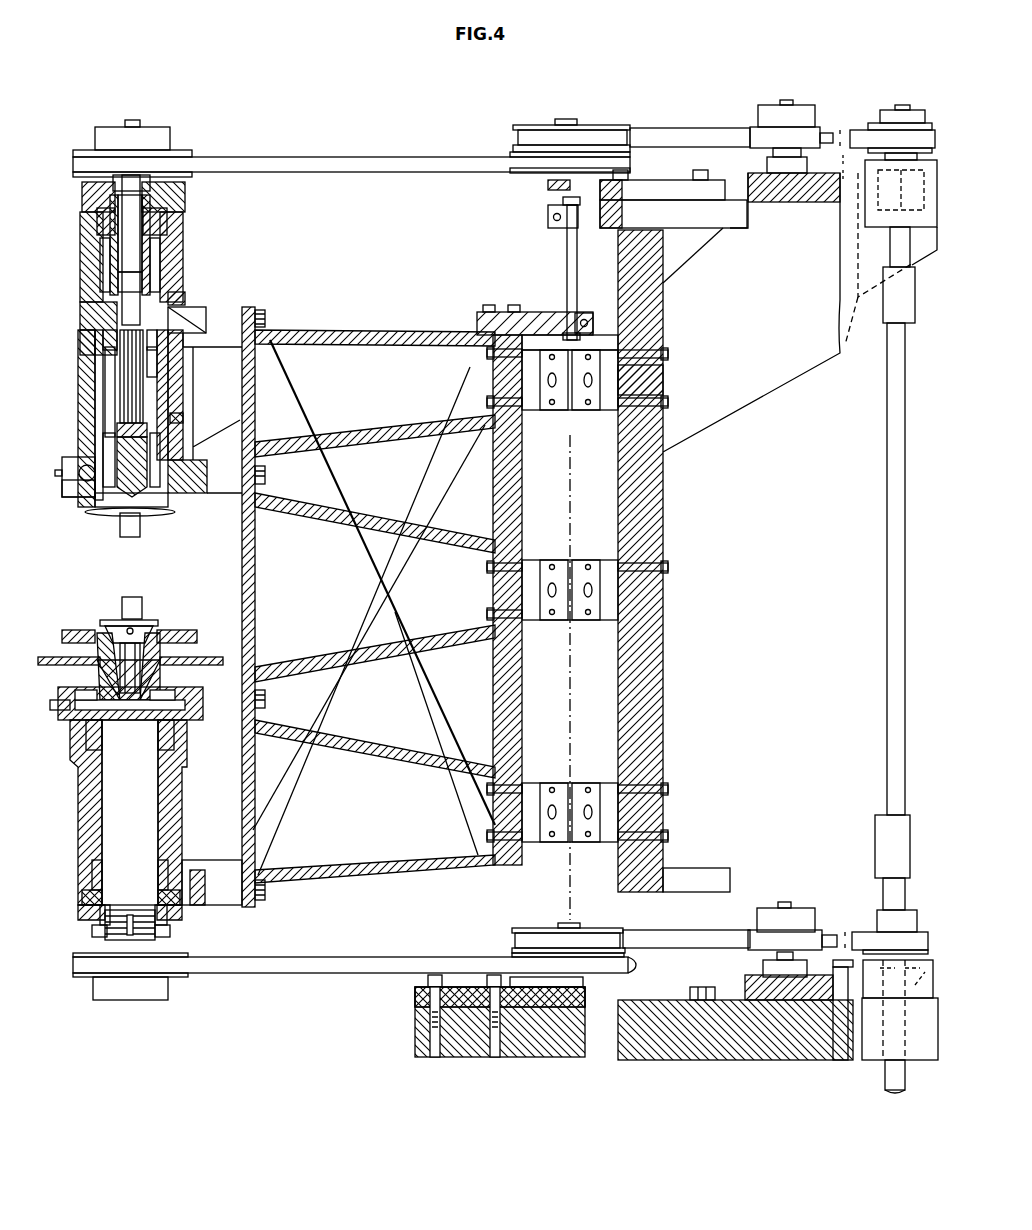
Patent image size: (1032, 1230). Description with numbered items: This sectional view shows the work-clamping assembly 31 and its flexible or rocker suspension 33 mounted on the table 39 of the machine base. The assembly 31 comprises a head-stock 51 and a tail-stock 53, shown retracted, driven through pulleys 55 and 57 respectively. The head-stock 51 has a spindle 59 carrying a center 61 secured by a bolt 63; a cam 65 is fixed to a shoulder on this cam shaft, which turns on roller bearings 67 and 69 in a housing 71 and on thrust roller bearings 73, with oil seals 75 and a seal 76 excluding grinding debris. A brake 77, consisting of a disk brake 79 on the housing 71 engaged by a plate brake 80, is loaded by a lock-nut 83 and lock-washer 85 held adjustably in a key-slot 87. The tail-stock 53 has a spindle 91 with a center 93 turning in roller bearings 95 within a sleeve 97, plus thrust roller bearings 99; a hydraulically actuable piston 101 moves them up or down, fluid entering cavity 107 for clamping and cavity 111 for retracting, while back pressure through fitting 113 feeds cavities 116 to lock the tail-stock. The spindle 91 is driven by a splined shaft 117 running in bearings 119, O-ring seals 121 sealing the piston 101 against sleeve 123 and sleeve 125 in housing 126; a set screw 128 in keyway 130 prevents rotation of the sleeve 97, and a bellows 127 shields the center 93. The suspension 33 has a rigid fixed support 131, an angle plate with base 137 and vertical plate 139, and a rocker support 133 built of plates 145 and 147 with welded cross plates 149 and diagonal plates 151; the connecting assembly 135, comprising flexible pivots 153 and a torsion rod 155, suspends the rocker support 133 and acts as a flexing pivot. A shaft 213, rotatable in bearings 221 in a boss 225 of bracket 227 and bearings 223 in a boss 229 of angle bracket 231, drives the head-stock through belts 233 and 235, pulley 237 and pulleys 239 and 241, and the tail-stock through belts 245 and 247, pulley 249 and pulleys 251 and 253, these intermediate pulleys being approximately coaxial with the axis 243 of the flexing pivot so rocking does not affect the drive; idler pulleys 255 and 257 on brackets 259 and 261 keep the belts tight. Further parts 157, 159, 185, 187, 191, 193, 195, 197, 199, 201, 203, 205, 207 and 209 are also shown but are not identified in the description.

The work-clamping assembly 31 is at (136, 576).
The flexible suspension 33 is at (379, 254).
The table 39 is at (663, 1091).
The head-stock 51 is at (140, 804).
The tail-stock 53 is at (135, 362).
The pulley 55 is at (170, 980).
The pulley 57 is at (182, 152).
The spindle 59 is at (158, 640).
The center 61 is at (142, 622).
The bolt 63 is at (170, 680).
The cam 65 is at (210, 665).
The roller bearing 67 is at (203, 716).
The roller bearing 69 is at (92, 872).
The housing 71 is at (140, 772).
The thrust roller bearings 73 is at (72, 762).
The oil seals 75 is at (82, 898).
The seal 76 is at (197, 636).
The brake 77 is at (62, 926).
The disk brake 79 is at (108, 910).
The plate brake 80 is at (150, 912).
The lock-nut 83 is at (162, 938).
The lock-washer 85 is at (167, 922).
The key-slot 87 is at (100, 936).
The spindle 91 is at (92, 513).
The center 93 is at (118, 530).
The roller bearings 95 is at (150, 372).
The sleeve 97 is at (185, 372).
The thrust roller bearings 99 is at (103, 340).
The hydraulically actuable piston 101 is at (160, 262).
The cavity 107 is at (178, 205).
The cavity 111 is at (98, 258).
The fitting 113 is at (62, 476).
The cavities 116 is at (68, 490).
The splined shaft 117 is at (95, 328).
The bearings 119 is at (150, 183).
The O-ring seals 121 is at (97, 230).
The sleeve 123 is at (150, 237).
The sleeve 125 is at (193, 292).
The housing 126 is at (183, 400).
The bellows 127 is at (172, 515).
The set screw 128 is at (183, 420).
The keyway 130 is at (170, 393).
The fixed support 131 is at (586, 575).
The rocker support 133 is at (368, 599).
The connecting assembly 135 is at (493, 520).
The base 137 is at (755, 1062).
The vertical plate 139 is at (666, 490).
The plate 145 is at (490, 488).
The plate 147 is at (253, 592).
The strengthening cross plates 149 is at (388, 445).
The diagonal plates 151 is at (408, 497).
The flexible pivots 153 is at (588, 430).
The torsion rod 155 is at (567, 262).
The right half 157 is at (608, 516).
The left half 159 is at (557, 516).
The bolt 185 is at (670, 358).
The spacer 187 is at (664, 377).
The bolt 191 is at (486, 565).
The bolt 193 is at (490, 588).
The bolt 195 is at (262, 890).
The bolt 197 is at (262, 318).
The bracket 199 is at (195, 890).
The mounting block 201 is at (206, 315).
The brace 203 is at (242, 750).
The mounting block 205 is at (230, 492).
The bracket 207 is at (609, 228).
The top plate 209 is at (494, 312).
The shaft 213 is at (885, 422).
The bearings 221 is at (898, 1010).
The bearings 223 is at (901, 212).
The boss 225 is at (900, 1045).
The bracket 227 is at (734, 985).
The boss 229 is at (845, 222).
The angle bracket 231 is at (840, 178).
The belt 233 is at (688, 938).
The belt 235 is at (372, 957).
The pulley 237 is at (866, 928).
The pulley 239 is at (624, 930).
The pulley 241 is at (651, 962).
The axis 243 is at (570, 898).
The belt 245 is at (697, 135).
The belt 247 is at (392, 158).
The pulley 249 is at (870, 127).
The pulley 251 is at (520, 127).
The pulley 253 is at (520, 152).
The idler pulley 255 is at (808, 912).
The idler pulley 257 is at (762, 118).
The bracket 259 is at (766, 968).
The bracket 261 is at (790, 190).